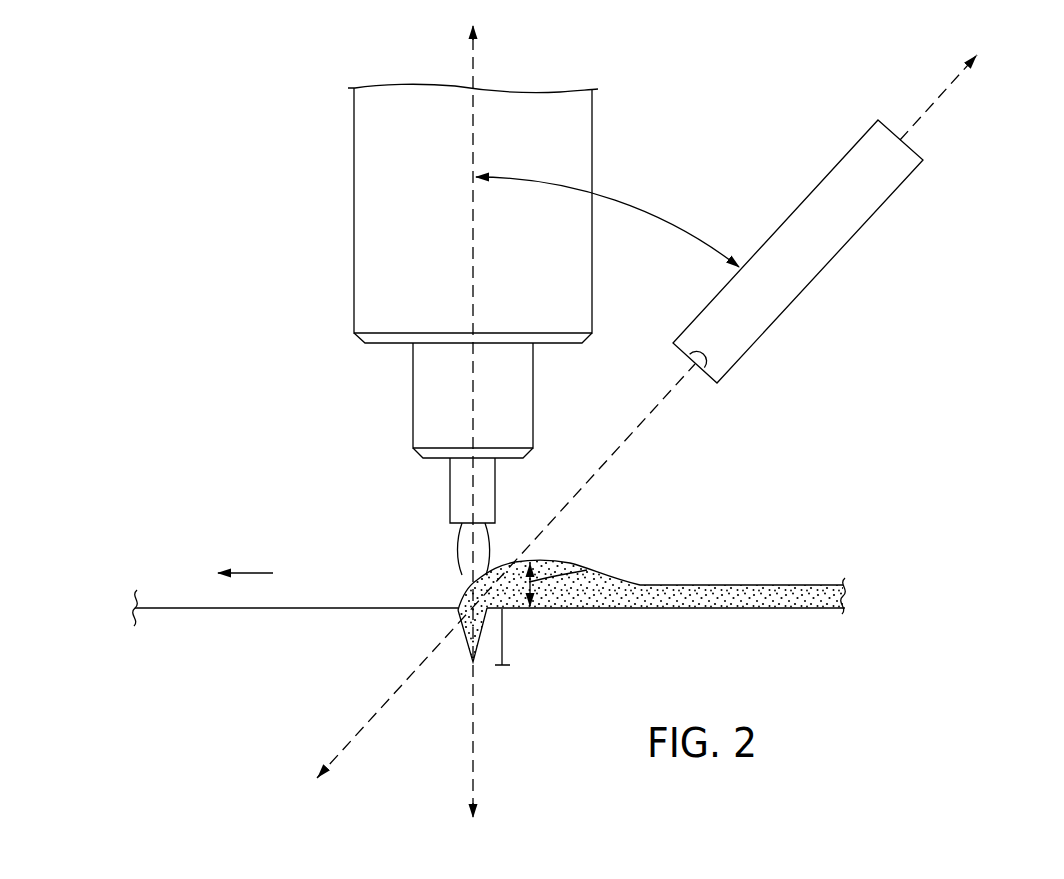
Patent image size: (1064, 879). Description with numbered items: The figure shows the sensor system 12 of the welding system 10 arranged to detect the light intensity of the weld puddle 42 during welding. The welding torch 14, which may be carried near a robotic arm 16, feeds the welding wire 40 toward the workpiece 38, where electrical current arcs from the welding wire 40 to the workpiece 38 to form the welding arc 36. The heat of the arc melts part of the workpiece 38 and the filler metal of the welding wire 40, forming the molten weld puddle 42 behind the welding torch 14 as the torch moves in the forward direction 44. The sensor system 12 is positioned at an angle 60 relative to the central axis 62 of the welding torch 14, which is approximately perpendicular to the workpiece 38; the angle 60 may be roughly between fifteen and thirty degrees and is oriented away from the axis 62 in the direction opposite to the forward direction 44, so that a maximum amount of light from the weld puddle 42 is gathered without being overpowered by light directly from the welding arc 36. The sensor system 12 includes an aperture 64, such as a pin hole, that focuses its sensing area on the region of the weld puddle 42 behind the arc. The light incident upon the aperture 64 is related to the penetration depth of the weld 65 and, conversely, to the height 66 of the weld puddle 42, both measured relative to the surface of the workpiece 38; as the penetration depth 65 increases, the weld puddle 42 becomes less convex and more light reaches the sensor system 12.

The welding system 10 is at (122, 110).
The sensor system 12 is at (912, 170).
The welding torch 14 is at (354, 213).
The robotic arm 16 is at (412, 66).
The welding arc 36 is at (454, 585).
The workpiece 38 is at (745, 610).
The welding wire 40 is at (459, 548).
The weld puddle 42 is at (587, 570).
The forward direction 44 is at (248, 573).
The angle 60 is at (613, 198).
The axis 62 is at (475, 735).
The aperture 64 is at (708, 353).
The penetration depth of the weld 65 is at (503, 635).
The height of the weld puddle 66 is at (570, 568).